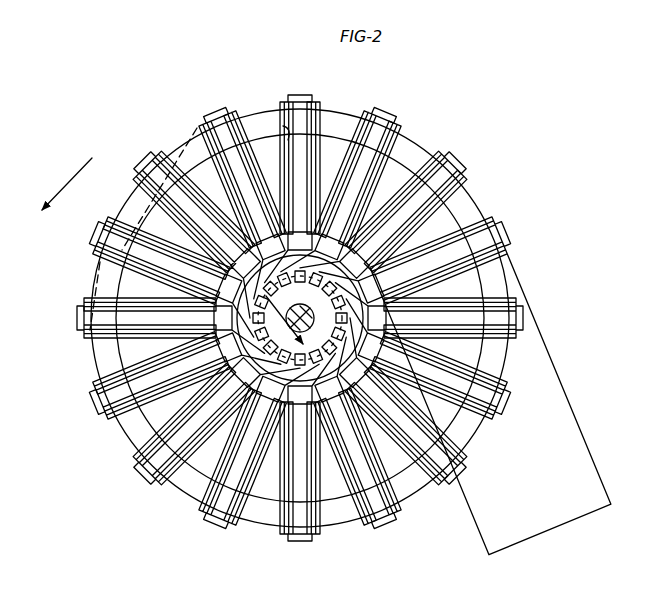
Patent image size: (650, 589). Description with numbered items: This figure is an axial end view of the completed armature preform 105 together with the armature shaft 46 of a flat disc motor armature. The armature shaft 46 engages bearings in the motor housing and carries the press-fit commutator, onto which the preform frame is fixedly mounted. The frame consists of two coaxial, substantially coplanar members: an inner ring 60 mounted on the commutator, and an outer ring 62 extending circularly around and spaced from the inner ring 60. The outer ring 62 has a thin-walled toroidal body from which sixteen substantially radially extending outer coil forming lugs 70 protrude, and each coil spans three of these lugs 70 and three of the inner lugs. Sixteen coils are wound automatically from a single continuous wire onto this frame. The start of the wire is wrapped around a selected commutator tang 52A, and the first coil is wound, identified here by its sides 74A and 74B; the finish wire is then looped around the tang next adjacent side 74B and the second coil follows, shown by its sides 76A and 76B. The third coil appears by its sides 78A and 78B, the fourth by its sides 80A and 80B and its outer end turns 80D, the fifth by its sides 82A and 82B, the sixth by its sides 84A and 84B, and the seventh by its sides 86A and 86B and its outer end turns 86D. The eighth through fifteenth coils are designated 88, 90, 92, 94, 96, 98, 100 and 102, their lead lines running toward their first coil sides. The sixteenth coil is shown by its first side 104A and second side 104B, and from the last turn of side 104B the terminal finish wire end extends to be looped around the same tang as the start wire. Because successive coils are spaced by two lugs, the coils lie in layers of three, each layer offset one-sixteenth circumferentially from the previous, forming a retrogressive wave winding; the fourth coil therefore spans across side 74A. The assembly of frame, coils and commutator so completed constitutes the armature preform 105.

The armature preform 105 is at (181, 81).
The outer ring 62 is at (250, 106).
The inner ring 60 is at (404, 337).
The first coil side of sixth coil 84A is at (514, 334).
The first coil side of third coil 78A is at (507, 241).
The second coil side of sixth coil 84B is at (455, 158).
The first coil side of sixteenth coil 104A is at (471, 181).
The second coil side of third coil 78B is at (384, 108).
The thirteenth coil 98 is at (398, 125).
The tenth coil 92 is at (318, 100).
The second coil side of sixteenth coil 104B is at (292, 94).
The first coil side of seventh coil 86A is at (220, 100).
The first coil side of fourth coil 80A is at (168, 146).
The outer coil forming lugs 70 is at (147, 154).
The first coil side of first coil 74A is at (108, 224).
The second coil side of seventh coil 86B is at (95, 253).
The second coil side of fourth coil 80B is at (85, 336).
The fifteenth coil 100 is at (83, 301).
The outer end turns of fourth coil 80D is at (92, 278).
The outer end turns of seventh coil 86D is at (197, 128).
The eleventh coil 94 is at (97, 385).
The second coil side of first coil 74B is at (110, 425).
The eighth coil 88 is at (147, 473).
The first coil side of fifth coil 82A is at (212, 519).
The first coil side of second coil 76A is at (283, 533).
The second coil side of fifth coil 82B is at (384, 523).
The fifteenth coil 102 is at (363, 528).
The second coil side of second coil 76B is at (468, 472).
The twelfth coil 96 is at (434, 499).
The ninth coil 90 is at (496, 432).
The commutator tang 52A is at (308, 307).
The armature shaft 46 is at (326, 334).